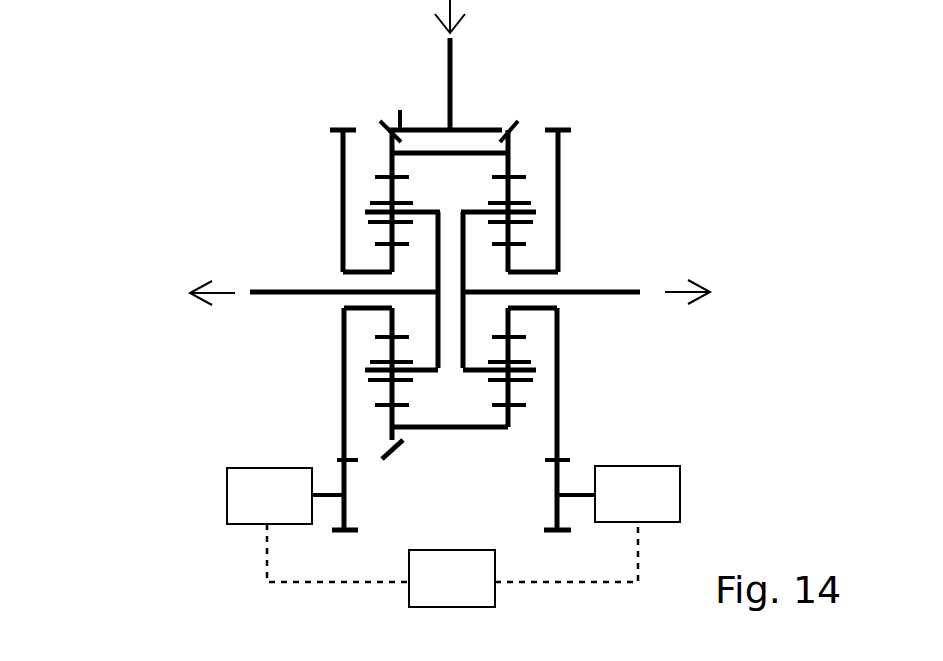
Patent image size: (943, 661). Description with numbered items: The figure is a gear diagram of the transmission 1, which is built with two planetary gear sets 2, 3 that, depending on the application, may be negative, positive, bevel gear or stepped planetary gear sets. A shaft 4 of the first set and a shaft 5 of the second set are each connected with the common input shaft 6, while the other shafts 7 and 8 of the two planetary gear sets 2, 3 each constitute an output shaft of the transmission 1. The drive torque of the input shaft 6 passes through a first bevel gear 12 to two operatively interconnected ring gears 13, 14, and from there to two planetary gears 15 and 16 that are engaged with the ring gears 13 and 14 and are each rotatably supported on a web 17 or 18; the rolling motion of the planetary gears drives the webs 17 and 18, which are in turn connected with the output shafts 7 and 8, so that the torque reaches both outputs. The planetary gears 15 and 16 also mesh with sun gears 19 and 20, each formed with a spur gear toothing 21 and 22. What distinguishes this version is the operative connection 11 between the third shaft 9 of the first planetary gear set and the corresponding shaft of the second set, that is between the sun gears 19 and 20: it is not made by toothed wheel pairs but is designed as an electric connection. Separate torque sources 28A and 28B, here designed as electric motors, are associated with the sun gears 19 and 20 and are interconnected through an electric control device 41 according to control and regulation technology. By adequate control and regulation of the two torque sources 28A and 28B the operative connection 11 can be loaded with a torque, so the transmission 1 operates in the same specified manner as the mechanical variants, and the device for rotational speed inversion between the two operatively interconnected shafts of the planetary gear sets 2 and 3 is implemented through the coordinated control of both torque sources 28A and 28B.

The transmission 1 is at (140, 112).
The planetary gear set 2 is at (308, 192).
The planetary gear set 3 is at (593, 190).
The shaft 4 is at (375, 132).
The shaft 5 is at (520, 160).
The input shaft 6 is at (450, 50).
The output shaft 7 is at (250, 288).
The output shaft 8 is at (638, 288).
The third shaft 9 is at (325, 367).
The operative connection 11 is at (248, 553).
The first bevel gear 12 is at (392, 87).
The ring gear 13 is at (388, 406).
The ring gear 14 is at (512, 410).
The planetary gear 15 is at (390, 343).
The planetary gear 16 is at (512, 350).
The web 17 is at (430, 375).
The web 18 is at (468, 375).
The sun gear 19 is at (392, 258).
The sun gear 20 is at (508, 256).
The spur gear toothing 21 is at (336, 460).
The spur gear toothing 22 is at (563, 460).
The torque source 28A is at (226, 497).
The torque source 28B is at (682, 493).
The electric control device 41 is at (474, 572).